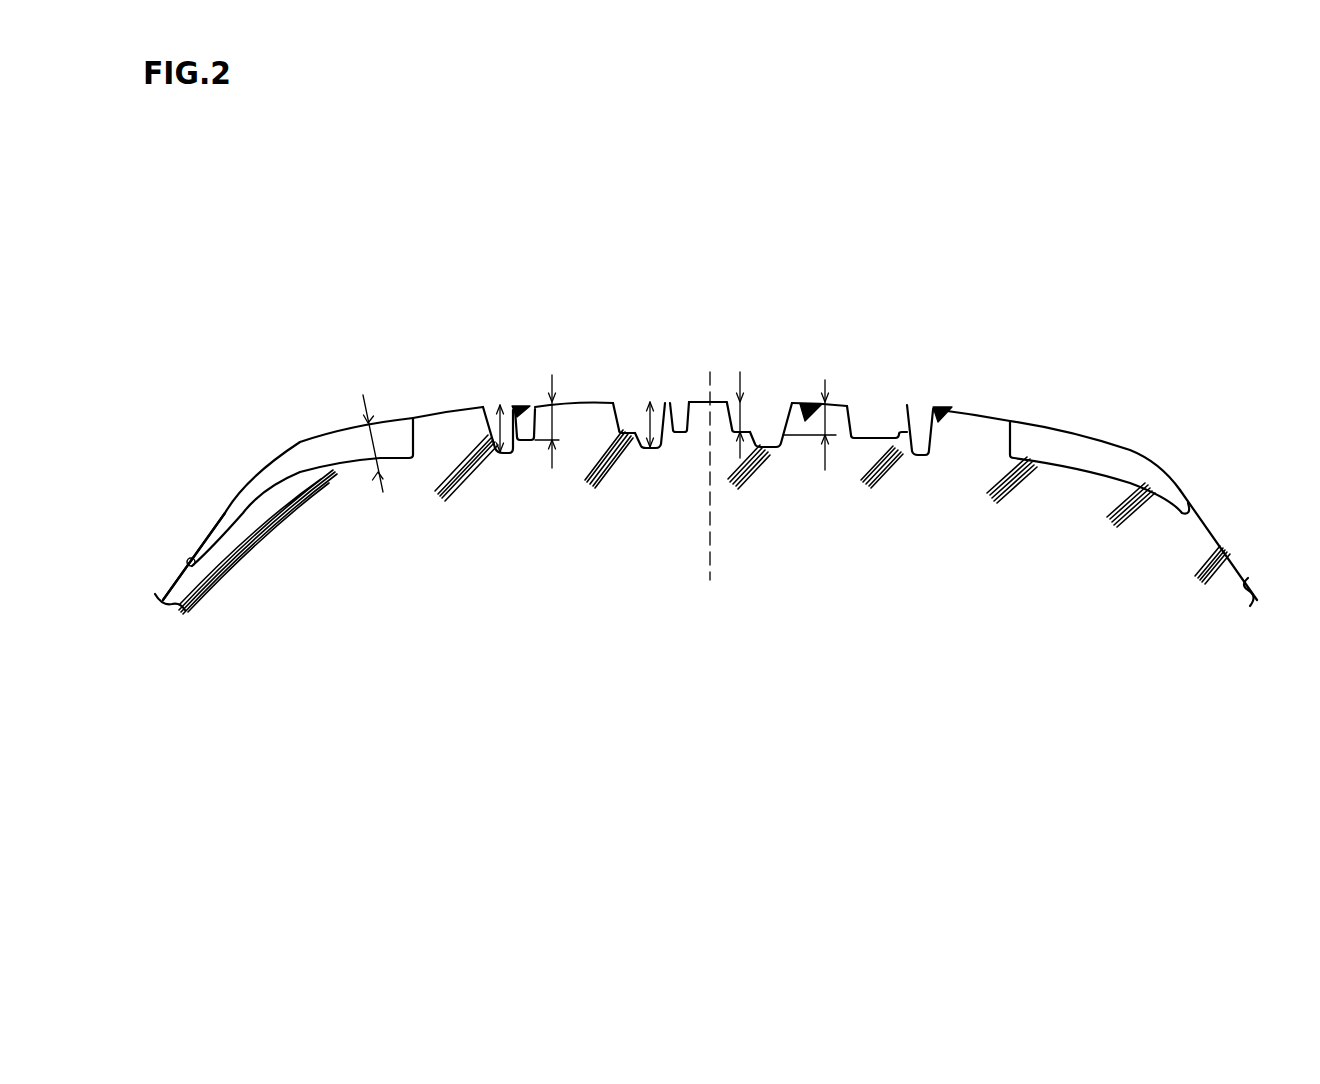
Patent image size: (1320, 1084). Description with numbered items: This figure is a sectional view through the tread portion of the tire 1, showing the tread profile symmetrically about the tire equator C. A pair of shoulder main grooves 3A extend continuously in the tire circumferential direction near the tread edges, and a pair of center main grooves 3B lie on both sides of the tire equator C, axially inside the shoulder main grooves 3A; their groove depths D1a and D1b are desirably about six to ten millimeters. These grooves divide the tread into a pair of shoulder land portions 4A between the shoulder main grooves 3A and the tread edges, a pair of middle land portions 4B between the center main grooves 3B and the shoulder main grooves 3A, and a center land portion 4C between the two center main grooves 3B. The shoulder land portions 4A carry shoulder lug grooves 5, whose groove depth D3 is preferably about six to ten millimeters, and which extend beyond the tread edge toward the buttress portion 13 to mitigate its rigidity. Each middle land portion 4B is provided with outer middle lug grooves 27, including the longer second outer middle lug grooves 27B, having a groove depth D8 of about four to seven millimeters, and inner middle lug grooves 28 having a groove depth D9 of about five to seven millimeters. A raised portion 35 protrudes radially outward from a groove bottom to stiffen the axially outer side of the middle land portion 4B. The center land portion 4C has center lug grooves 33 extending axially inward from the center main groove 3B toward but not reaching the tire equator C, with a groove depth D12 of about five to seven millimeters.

The pneumatic tire (tread portion) 1 is at (1083, 297).
The shoulder lug grooves 5 is at (326, 457).
The shoulder land portion 4A is at (430, 410).
The middle land portion 4B is at (571, 400).
The center land portion 4C is at (722, 400).
The shoulder main groove 3A is at (491, 410).
The center main groove 3B is at (644, 410).
The outer middle lug groove 27 is at (514, 408).
The second outer middle lug groove 27B is at (873, 422).
The inner middle lug groove 28 is at (622, 413).
The center lug groove 33 is at (681, 413).
The raised portion 35 is at (900, 426).
The buttress portion 13 is at (247, 479).
The tire equator C is at (710, 491).
The groove depth of the shoulder lug grooves D3 is at (377, 445).
The groove depth of the shoulder main grooves D1a is at (483, 437).
The groove depth of the outer middle lug groove D8 is at (552, 422).
The groove depth of the center main grooves D1b is at (647, 427).
The groove depth of the center lug groove D12 is at (726, 424).
The groove depth of the inner middle lug groove D9 is at (826, 424).